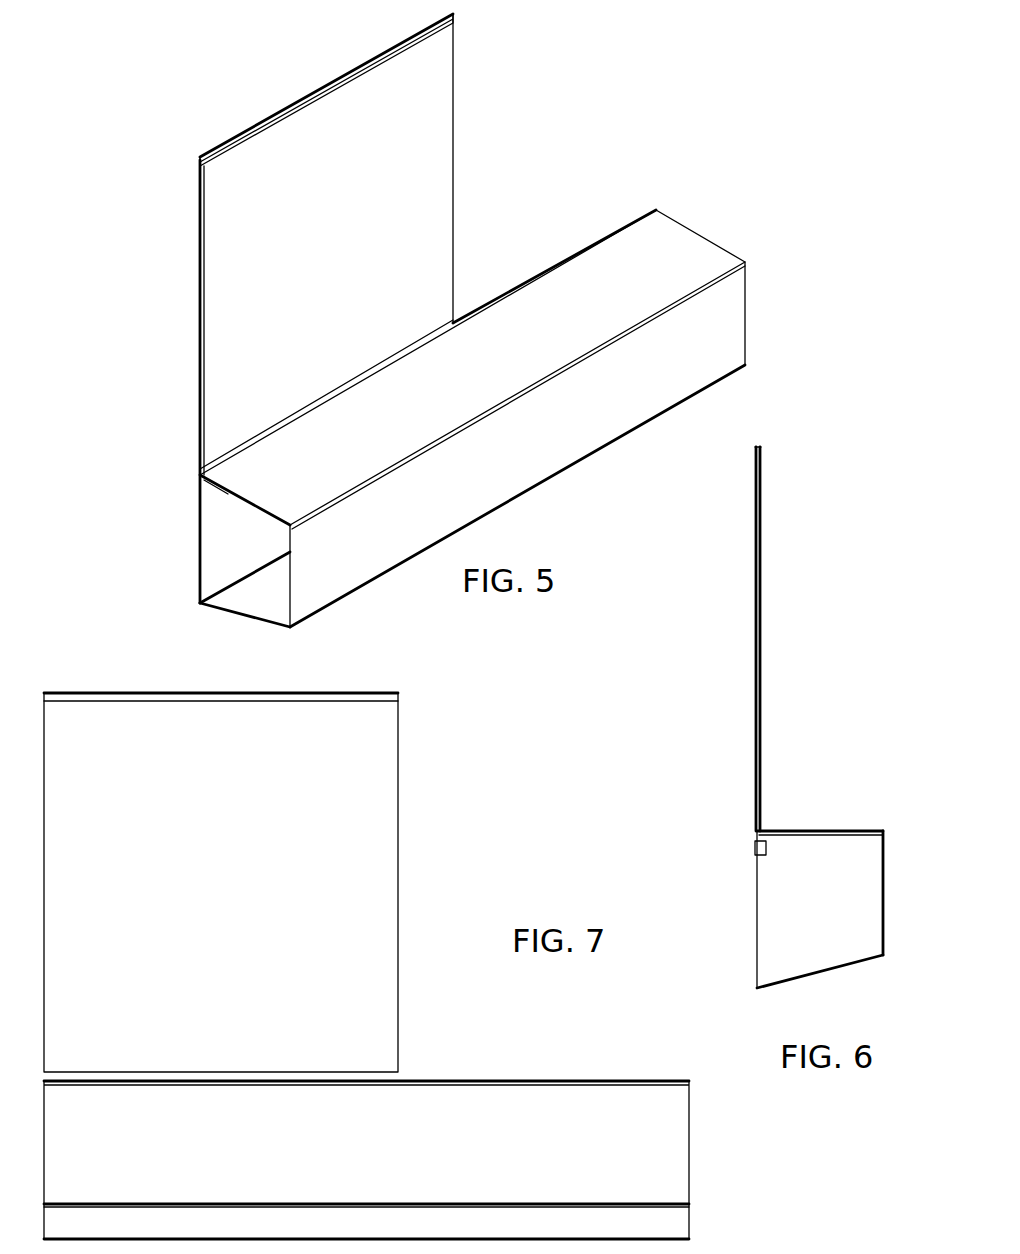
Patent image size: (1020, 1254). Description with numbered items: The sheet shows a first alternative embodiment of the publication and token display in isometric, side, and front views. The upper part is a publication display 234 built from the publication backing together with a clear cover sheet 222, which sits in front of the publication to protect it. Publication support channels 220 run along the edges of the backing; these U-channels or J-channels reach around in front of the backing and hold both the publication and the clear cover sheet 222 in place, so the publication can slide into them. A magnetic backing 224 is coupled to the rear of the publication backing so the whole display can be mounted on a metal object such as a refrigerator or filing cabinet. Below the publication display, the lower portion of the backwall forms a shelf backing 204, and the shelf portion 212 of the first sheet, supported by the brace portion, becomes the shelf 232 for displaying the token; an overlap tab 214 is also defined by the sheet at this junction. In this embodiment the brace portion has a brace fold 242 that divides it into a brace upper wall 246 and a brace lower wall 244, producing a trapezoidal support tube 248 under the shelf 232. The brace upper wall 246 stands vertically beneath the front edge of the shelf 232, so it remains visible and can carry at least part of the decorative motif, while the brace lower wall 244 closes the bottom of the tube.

In FIG. 5, the shelf backing 204 is at (210, 508).
In FIG. 5, the shelf portion 212 is at (683, 247).
In FIG. 5, the overlap tab 214 is at (200, 470).
In FIG. 5, the publication support channels 220 is at (335, 78).
In FIG. 7, the publication support channels 220 is at (88, 693).
In FIG. 5, the clear cover sheet 222 is at (432, 182).
In FIG. 7, the clear cover sheet 222 is at (372, 838).
In FIG. 5, the magnetic backing 224 is at (200, 270).
In FIG. 6, the shelf 232 is at (815, 831).
In FIG. 6, the publication display 234 is at (757, 447).
In FIG. 6, the brace fold 242 is at (886, 955).
In FIG. 5, the brace lower wall 244 is at (258, 603).
In FIG. 6, the brace lower wall 244 is at (818, 975).
In FIG. 7, the brace lower wall 244 is at (683, 1232).
In FIG. 5, the brace upper wall 246 is at (715, 328).
In FIG. 6, the brace upper wall 246 is at (886, 897).
In FIG. 7, the brace upper wall 246 is at (668, 1157).
In FIG. 5, the trapezoidal support tube 248 is at (160, 485).